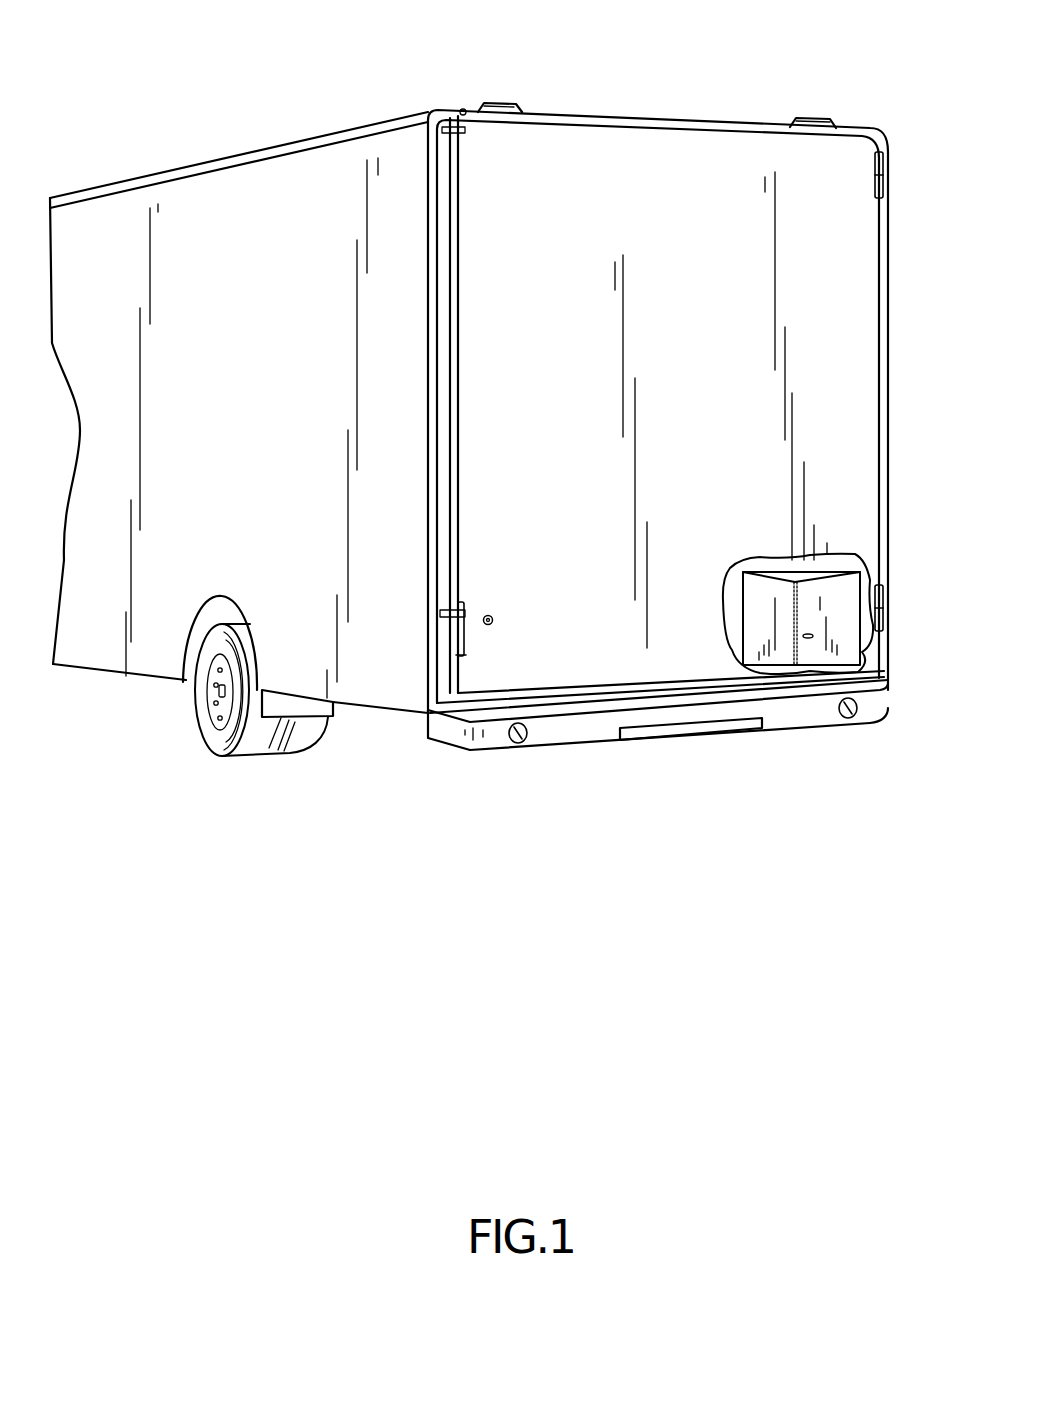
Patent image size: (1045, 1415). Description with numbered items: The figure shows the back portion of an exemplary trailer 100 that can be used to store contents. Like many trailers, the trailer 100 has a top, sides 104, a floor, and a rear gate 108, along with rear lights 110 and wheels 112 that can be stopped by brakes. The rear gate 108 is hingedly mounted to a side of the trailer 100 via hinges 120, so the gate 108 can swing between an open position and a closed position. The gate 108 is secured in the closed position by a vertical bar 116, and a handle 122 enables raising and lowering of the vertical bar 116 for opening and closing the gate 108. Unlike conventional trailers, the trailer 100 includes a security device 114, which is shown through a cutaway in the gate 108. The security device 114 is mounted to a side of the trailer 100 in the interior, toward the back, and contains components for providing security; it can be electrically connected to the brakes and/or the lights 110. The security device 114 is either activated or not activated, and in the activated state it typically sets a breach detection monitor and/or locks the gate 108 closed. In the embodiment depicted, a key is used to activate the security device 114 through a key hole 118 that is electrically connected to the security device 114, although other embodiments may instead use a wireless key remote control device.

The trailer 100 is at (136, 49).
The sides 104 is at (140, 667).
The rear gate 108 is at (852, 405).
The rear lights 110 is at (523, 745).
The wheels 112 is at (210, 735).
The security device 114 is at (847, 637).
The vertical bar 116 is at (458, 352).
The key hole 118 is at (493, 620).
The hinges 120 is at (883, 175).
The handle 122 is at (463, 640).